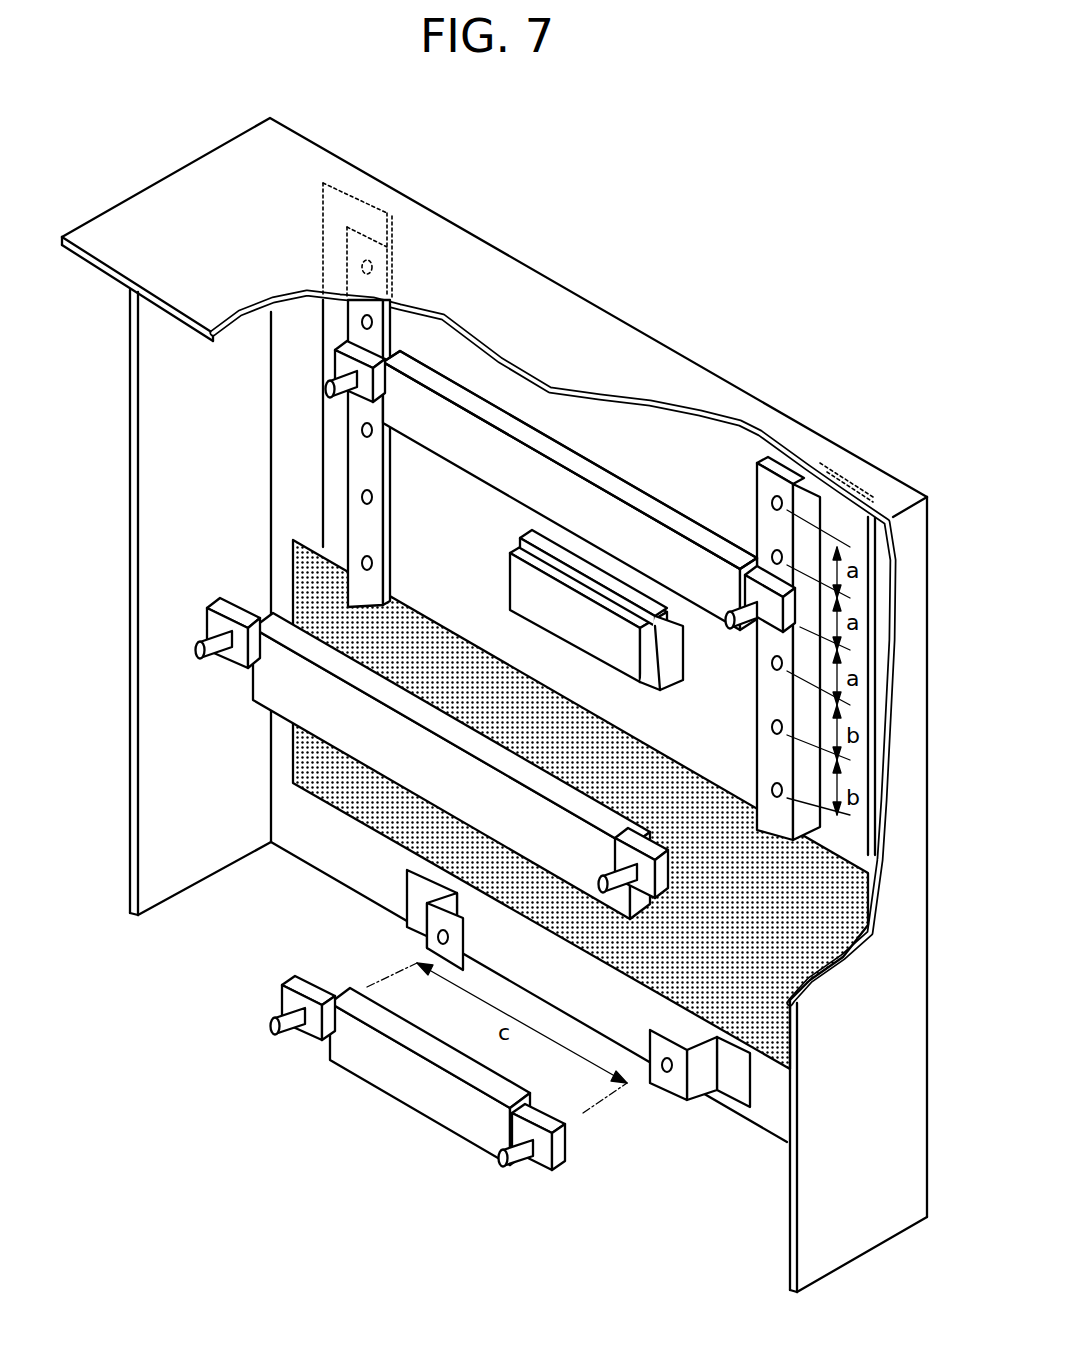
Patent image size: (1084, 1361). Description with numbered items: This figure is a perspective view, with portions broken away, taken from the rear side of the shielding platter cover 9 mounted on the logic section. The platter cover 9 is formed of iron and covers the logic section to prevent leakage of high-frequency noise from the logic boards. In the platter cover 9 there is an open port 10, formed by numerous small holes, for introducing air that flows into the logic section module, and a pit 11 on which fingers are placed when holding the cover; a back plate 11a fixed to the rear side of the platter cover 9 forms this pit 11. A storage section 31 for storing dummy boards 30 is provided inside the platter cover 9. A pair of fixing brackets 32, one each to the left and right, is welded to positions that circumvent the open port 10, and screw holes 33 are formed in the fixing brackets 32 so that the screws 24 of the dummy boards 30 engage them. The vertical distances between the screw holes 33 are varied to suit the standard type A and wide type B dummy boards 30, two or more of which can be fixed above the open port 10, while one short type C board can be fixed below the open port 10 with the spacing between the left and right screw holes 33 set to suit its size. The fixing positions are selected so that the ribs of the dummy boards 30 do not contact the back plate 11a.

The platter cover 9 is at (703, 367).
The open port 10 is at (307, 755).
The pit 11 is at (543, 597).
The back plate 11a is at (580, 627).
The screw 24 is at (327, 390).
The dummy board 30 is at (485, 460).
The storage section 31 is at (577, 430).
The fixing bracket 32 is at (362, 460).
The screw hole 33 is at (372, 325).